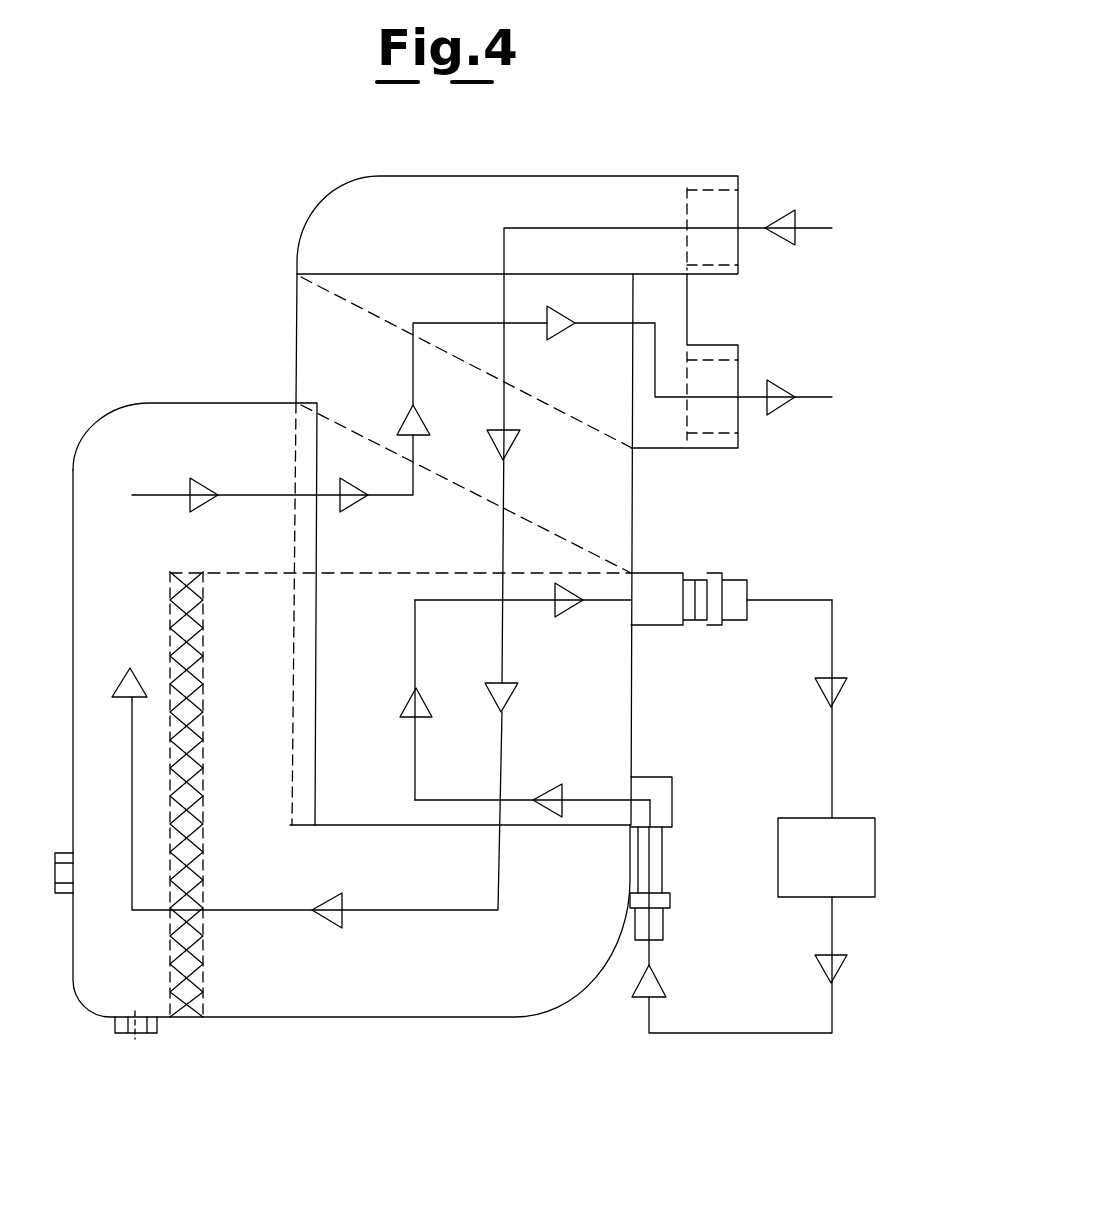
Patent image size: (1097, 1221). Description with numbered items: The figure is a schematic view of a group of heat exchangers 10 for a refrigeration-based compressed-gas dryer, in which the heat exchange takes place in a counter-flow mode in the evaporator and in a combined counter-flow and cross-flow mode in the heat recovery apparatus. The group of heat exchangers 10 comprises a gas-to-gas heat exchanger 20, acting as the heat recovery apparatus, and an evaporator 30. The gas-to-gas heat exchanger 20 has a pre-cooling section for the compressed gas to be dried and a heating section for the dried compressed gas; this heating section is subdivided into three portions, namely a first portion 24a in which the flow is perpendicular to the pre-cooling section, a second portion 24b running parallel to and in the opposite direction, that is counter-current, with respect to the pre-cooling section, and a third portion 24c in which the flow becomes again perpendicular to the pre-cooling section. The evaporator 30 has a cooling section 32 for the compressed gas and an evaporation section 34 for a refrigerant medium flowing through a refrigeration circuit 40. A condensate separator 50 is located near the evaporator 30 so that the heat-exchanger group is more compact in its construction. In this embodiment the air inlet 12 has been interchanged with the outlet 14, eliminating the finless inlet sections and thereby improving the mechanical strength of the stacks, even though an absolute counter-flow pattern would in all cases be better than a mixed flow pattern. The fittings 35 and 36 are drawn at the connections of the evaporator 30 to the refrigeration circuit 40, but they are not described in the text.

The group of heat exchangers 10 is at (200, 311).
The air inlet 12 is at (818, 227).
The outlet 14 is at (818, 397).
The gas-to-gas heat exchanger 20 is at (323, 308).
The first portion 24a is at (388, 497).
The second portion 24b is at (413, 377).
The third portion 24c is at (596, 323).
The evaporator 30 is at (577, 731).
The cooling section 32 is at (498, 757).
The evaporation section 34 is at (415, 762).
The connector fitting 35 is at (655, 776).
The connector fitting 36 is at (660, 617).
The refrigeration circuit 40 is at (867, 852).
The condensate separator 50 is at (292, 989).